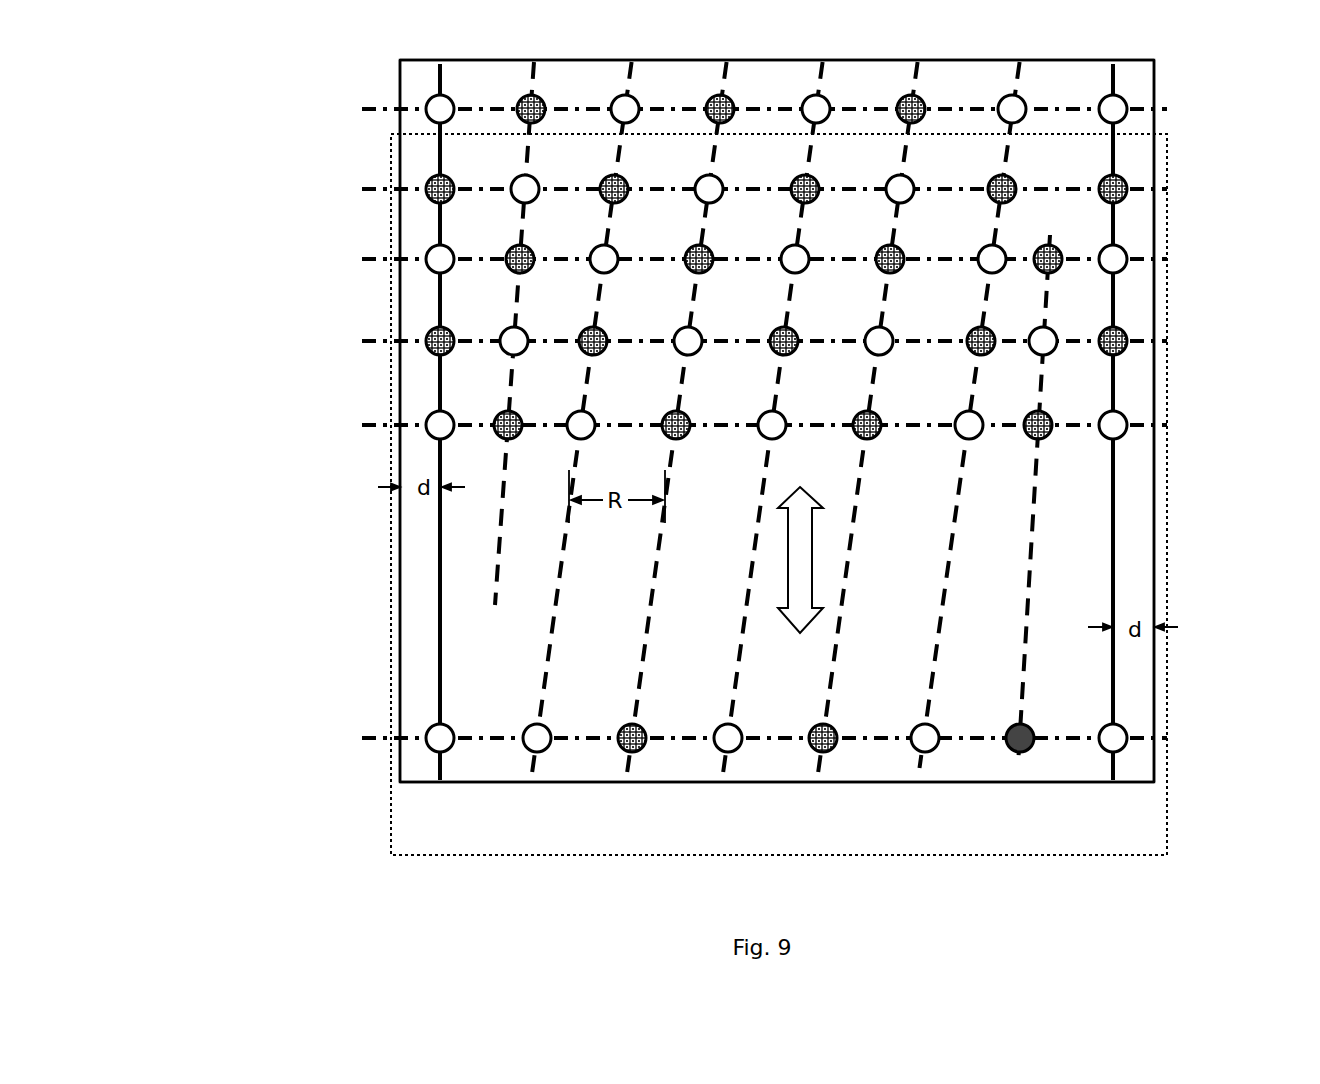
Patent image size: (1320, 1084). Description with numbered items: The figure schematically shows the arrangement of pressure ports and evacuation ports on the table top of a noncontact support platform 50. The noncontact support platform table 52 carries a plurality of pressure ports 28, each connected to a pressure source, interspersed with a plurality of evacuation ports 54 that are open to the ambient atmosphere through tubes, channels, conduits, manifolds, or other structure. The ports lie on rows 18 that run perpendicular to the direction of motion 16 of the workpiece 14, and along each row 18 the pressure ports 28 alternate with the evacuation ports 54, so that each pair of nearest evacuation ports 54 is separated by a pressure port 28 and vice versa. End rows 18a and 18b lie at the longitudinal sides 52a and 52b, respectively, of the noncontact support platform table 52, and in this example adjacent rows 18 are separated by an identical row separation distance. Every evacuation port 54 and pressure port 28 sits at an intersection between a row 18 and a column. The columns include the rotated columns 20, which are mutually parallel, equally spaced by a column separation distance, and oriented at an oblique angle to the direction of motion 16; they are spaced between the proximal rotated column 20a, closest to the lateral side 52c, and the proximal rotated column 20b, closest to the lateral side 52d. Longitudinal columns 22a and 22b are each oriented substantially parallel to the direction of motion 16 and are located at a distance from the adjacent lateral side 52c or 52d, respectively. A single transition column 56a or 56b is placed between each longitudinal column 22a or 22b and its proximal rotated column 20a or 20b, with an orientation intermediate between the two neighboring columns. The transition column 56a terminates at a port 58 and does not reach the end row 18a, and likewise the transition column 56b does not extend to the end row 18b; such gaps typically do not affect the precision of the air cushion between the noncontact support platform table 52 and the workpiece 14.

The workpiece 14 is at (393, 552).
The direction of motion 16 is at (812, 532).
The rows 18 is at (388, 260).
The end row 18a is at (400, 108).
The end row 18b is at (395, 738).
The rotated columns 20 is at (810, 752).
The proximal rotated column 20a is at (935, 658).
The proximal rotated column 20b is at (558, 606).
The longitudinal column 22a is at (1115, 307).
The longitudinal column 22b is at (440, 651).
The pressure ports 28 is at (1126, 418).
The noncontact support platform 50 is at (221, 384).
The noncontact support platform table 52 is at (1155, 567).
The longitudinal side 52a is at (1093, 60).
The longitudinal side 52b is at (867, 783).
The lateral side 52c is at (1152, 222).
The lateral side 52d is at (438, 307).
The evacuation ports 54 is at (497, 418).
The transition column 56a is at (1030, 503).
The transition column 56b is at (495, 552).
The port 58 is at (1060, 253).